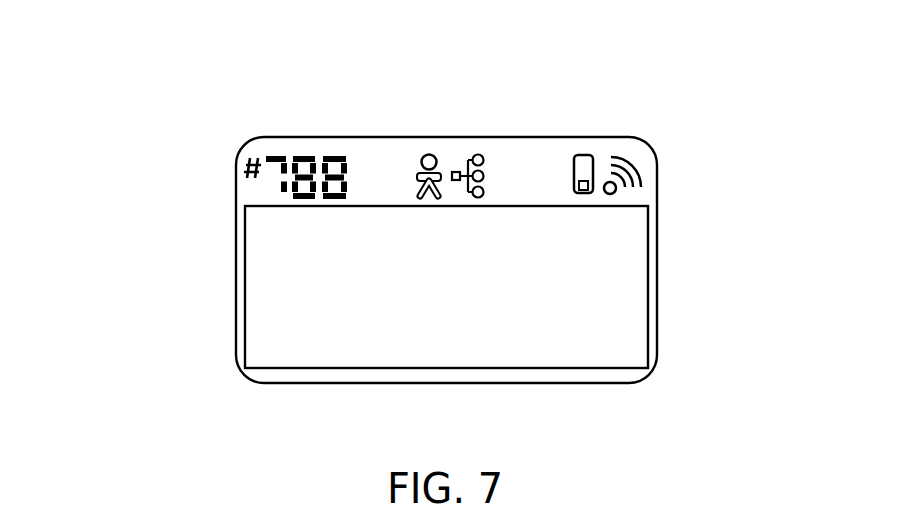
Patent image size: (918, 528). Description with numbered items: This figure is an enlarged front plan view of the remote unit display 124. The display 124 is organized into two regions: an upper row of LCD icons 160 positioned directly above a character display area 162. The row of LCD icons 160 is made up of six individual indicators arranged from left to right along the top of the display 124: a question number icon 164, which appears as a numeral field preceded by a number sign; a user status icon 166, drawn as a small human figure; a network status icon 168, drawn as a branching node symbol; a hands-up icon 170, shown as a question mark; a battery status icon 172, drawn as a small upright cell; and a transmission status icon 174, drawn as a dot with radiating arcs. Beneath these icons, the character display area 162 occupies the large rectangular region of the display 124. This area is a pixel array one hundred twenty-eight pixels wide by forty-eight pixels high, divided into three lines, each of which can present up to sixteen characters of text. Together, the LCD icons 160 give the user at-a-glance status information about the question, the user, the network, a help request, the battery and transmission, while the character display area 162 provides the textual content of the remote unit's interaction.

The display 124 is at (205, 108).
The LCD icons 160 is at (662, 143).
The character display area 162 is at (708, 298).
The question number icon 164 is at (320, 150).
The user status icon 166 is at (430, 150).
The network status icon 168 is at (493, 152).
The hands-up icon 170 is at (553, 149).
The battery status icon 172 is at (590, 157).
The transmission status icon 174 is at (641, 166).